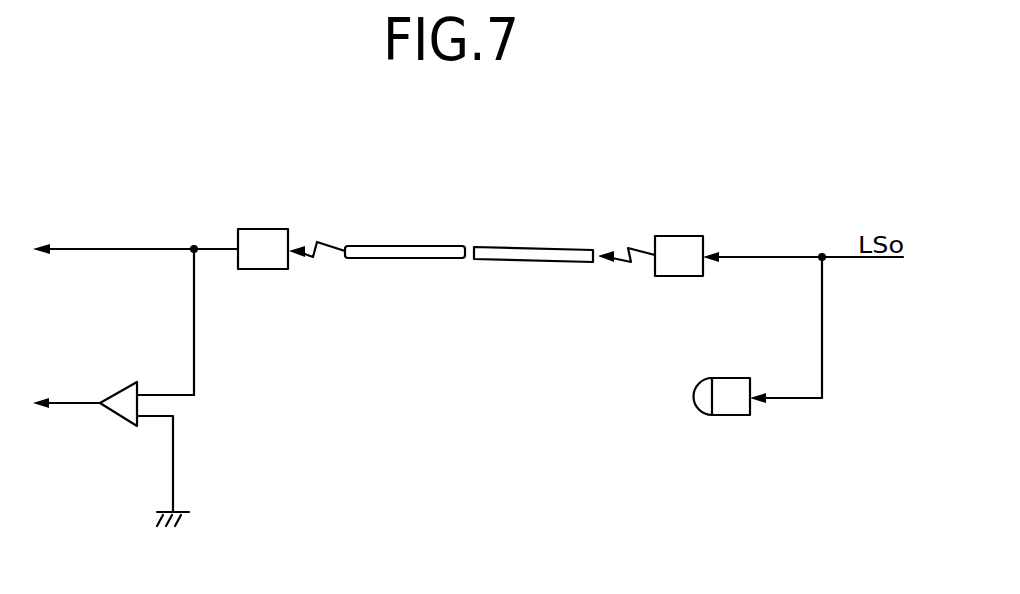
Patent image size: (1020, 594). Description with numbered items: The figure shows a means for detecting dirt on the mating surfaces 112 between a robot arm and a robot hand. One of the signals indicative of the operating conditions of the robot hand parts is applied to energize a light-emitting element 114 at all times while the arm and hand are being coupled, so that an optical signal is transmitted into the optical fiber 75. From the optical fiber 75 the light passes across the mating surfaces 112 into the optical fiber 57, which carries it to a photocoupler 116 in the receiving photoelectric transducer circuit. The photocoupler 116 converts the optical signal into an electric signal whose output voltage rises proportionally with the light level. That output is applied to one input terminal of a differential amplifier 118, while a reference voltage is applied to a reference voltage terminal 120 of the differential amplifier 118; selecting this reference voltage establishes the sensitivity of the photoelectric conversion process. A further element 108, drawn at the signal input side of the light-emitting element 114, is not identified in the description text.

The optical fiber 57 is at (398, 258).
The optical fiber 75 is at (548, 249).
The lamp 108 is at (726, 400).
The mating surfaces 112 is at (473, 222).
The light-emitting element 114 is at (676, 250).
The photocoupler 116 is at (264, 255).
The differential amplifier 118 is at (122, 400).
The reference voltage terminal 120 is at (178, 483).